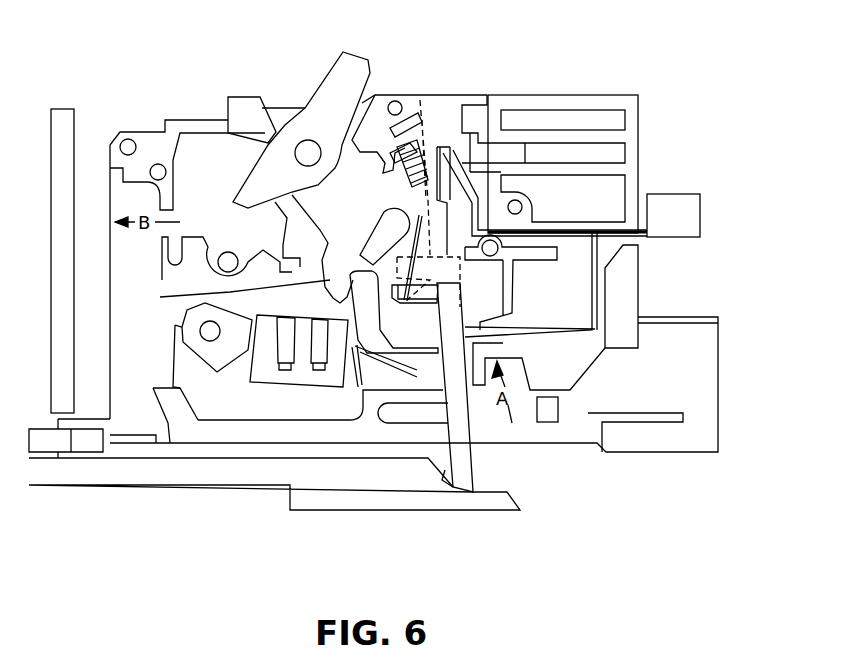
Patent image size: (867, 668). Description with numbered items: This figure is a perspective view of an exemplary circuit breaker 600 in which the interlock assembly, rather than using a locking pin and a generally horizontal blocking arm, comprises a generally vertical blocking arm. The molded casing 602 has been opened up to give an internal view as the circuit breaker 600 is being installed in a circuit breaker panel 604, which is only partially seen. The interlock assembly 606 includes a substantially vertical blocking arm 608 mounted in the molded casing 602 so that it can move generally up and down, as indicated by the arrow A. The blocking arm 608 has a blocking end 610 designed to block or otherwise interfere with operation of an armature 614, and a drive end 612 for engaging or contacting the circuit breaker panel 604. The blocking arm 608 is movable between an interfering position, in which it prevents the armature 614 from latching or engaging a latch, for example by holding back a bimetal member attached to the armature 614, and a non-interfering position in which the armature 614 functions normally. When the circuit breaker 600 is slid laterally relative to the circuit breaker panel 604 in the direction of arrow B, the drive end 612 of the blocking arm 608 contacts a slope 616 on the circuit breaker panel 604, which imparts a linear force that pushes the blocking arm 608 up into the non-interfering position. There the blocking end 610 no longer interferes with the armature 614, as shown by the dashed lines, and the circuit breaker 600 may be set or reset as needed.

The circuit breaker 600 is at (695, 85).
The molded casing 602 is at (593, 93).
The circuit breaker panel 604 is at (318, 512).
The interlock assembly 606 is at (437, 385).
The blocking arm 608 is at (466, 322).
The blocking end 610 is at (420, 100).
The drive end 612 is at (477, 465).
The armature 614 is at (392, 242).
The slope 616 is at (442, 480).